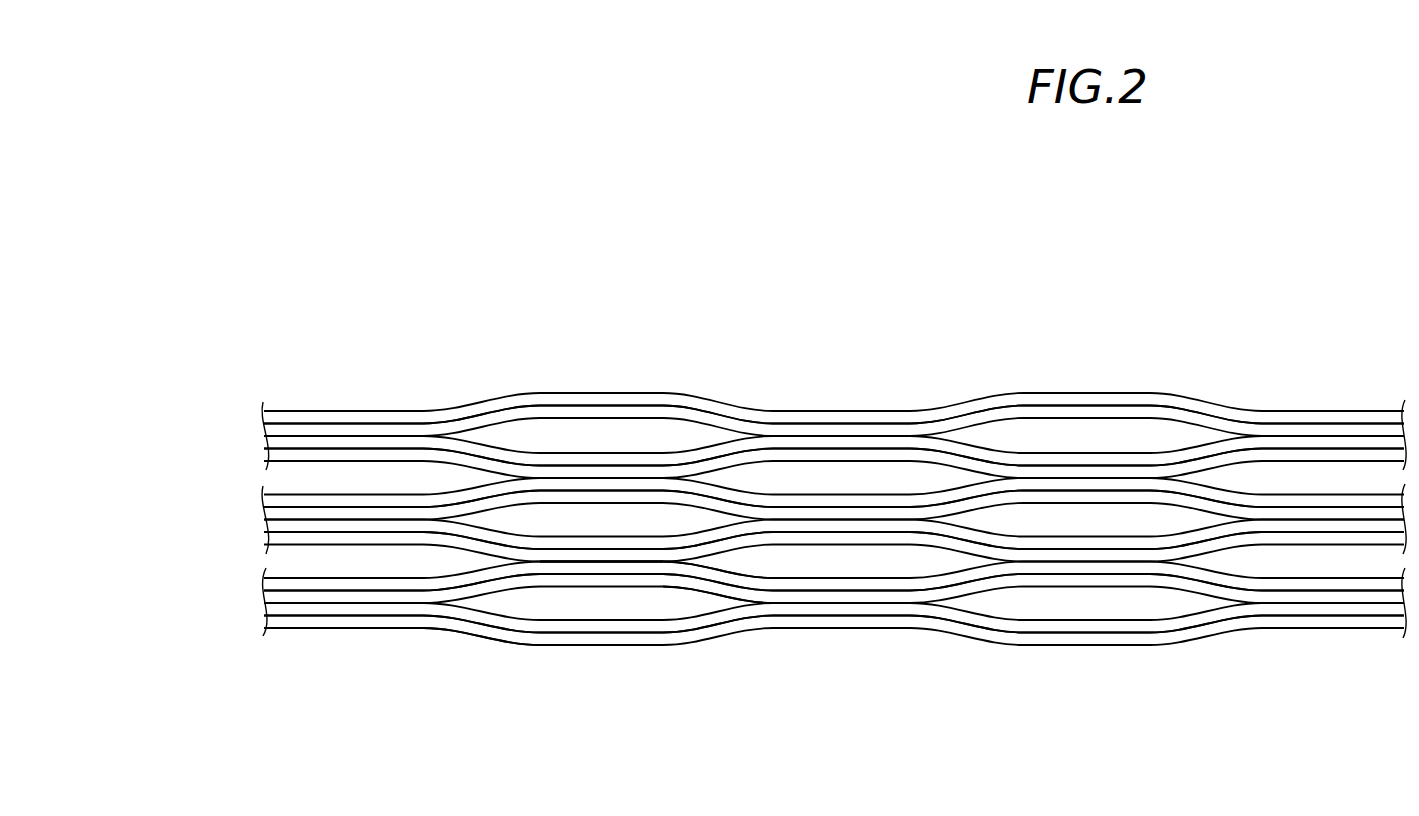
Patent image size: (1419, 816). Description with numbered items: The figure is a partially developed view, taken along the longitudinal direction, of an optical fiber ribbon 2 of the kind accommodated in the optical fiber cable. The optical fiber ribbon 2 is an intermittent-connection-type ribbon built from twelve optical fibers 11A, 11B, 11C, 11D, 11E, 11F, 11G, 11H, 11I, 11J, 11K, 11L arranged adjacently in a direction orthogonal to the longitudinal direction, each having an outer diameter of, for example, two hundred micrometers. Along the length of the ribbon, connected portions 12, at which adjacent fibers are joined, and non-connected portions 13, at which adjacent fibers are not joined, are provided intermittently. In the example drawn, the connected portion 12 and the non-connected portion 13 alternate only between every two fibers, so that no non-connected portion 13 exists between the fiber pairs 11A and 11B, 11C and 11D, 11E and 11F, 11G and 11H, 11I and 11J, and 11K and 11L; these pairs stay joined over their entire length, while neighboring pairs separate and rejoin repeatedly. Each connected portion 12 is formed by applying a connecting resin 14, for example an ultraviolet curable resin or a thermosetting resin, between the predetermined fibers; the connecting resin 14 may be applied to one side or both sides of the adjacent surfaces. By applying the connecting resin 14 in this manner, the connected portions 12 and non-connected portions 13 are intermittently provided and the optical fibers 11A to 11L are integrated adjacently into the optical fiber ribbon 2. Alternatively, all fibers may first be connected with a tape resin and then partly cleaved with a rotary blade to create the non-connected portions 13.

The optical fiber ribbon 2 is at (706, 345).
The optical fiber 11A is at (263, 416).
The optical fiber 11B is at (263, 429).
The optical fiber 11C is at (263, 442).
The optical fiber 11D is at (265, 455).
The optical fiber 11E is at (263, 501).
The optical fiber 11F is at (263, 514).
The optical fiber 11G is at (265, 527).
The optical fiber 11H is at (267, 540).
The optical fiber 11I is at (263, 584).
The optical fiber 11J is at (262, 597).
The optical fiber 11K is at (266, 610).
The optical fiber 11L is at (268, 623).
The connected portion 12 is at (616, 566).
The non-connected portion 13 is at (778, 566).
The connecting resin 14 is at (570, 562).